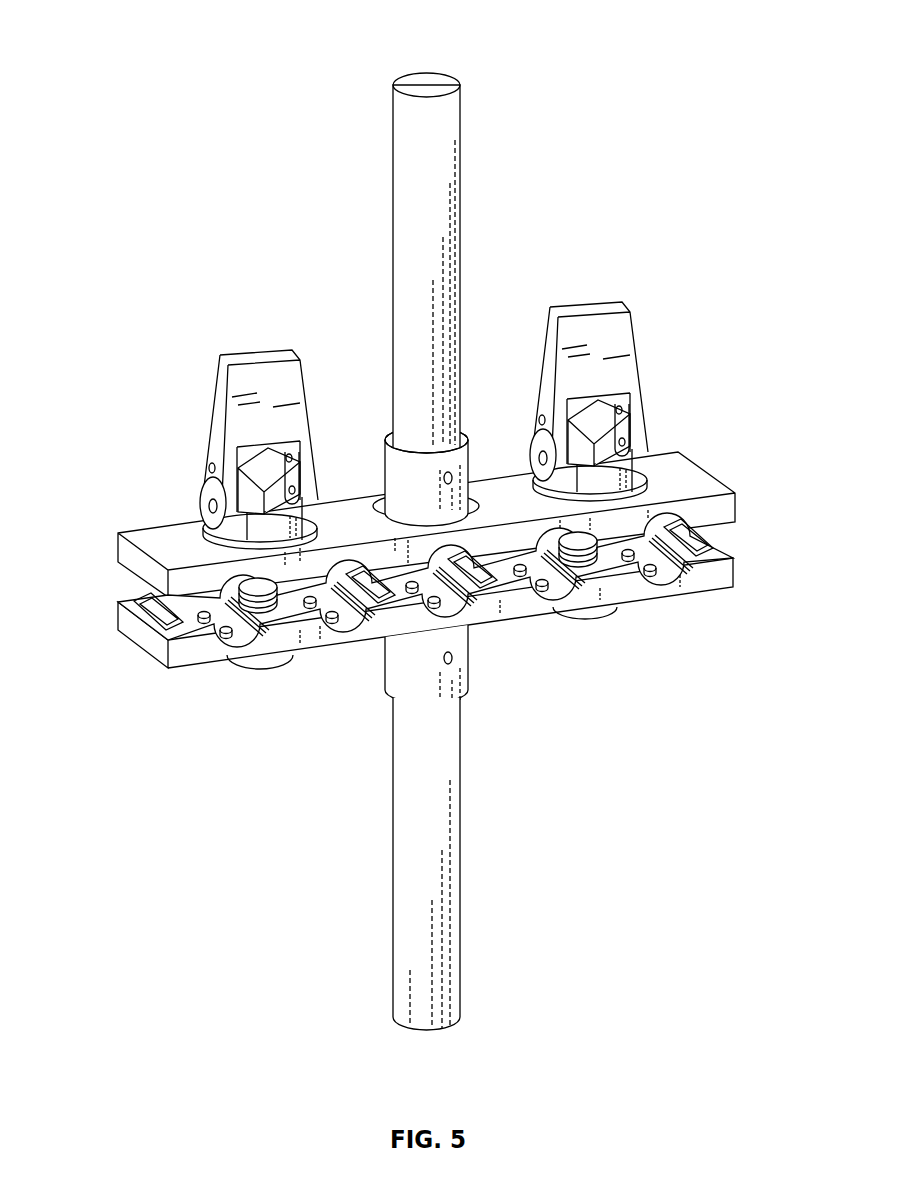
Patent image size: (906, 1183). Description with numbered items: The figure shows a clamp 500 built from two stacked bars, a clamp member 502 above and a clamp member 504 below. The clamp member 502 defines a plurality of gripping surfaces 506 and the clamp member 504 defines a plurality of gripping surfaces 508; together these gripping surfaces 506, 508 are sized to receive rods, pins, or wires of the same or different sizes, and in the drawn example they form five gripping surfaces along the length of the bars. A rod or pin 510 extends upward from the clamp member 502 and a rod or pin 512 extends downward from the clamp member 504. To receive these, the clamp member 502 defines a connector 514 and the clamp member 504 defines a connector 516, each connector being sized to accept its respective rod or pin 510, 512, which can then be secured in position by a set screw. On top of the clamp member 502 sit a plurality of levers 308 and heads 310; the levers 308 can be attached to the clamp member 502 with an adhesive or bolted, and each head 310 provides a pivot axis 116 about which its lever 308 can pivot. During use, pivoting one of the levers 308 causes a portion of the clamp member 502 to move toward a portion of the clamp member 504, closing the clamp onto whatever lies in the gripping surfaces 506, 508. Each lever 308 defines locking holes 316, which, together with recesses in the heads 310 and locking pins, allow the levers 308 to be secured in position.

The clamp 500 is at (146, 40).
The rod or pin 510 is at (393, 205).
The rod or pin 512 is at (461, 880).
The connector 514 is at (383, 445).
The connector 516 is at (462, 667).
The clamp member 502 is at (707, 478).
The clamp member 504 is at (728, 574).
The gripping surfaces 506 is at (402, 345).
The gripping surfaces 508 is at (461, 771).
The lever 308 is at (222, 378).
The head 310 is at (264, 492).
The locking holes 316 is at (287, 457).
The pivot axis 116 is at (207, 503).